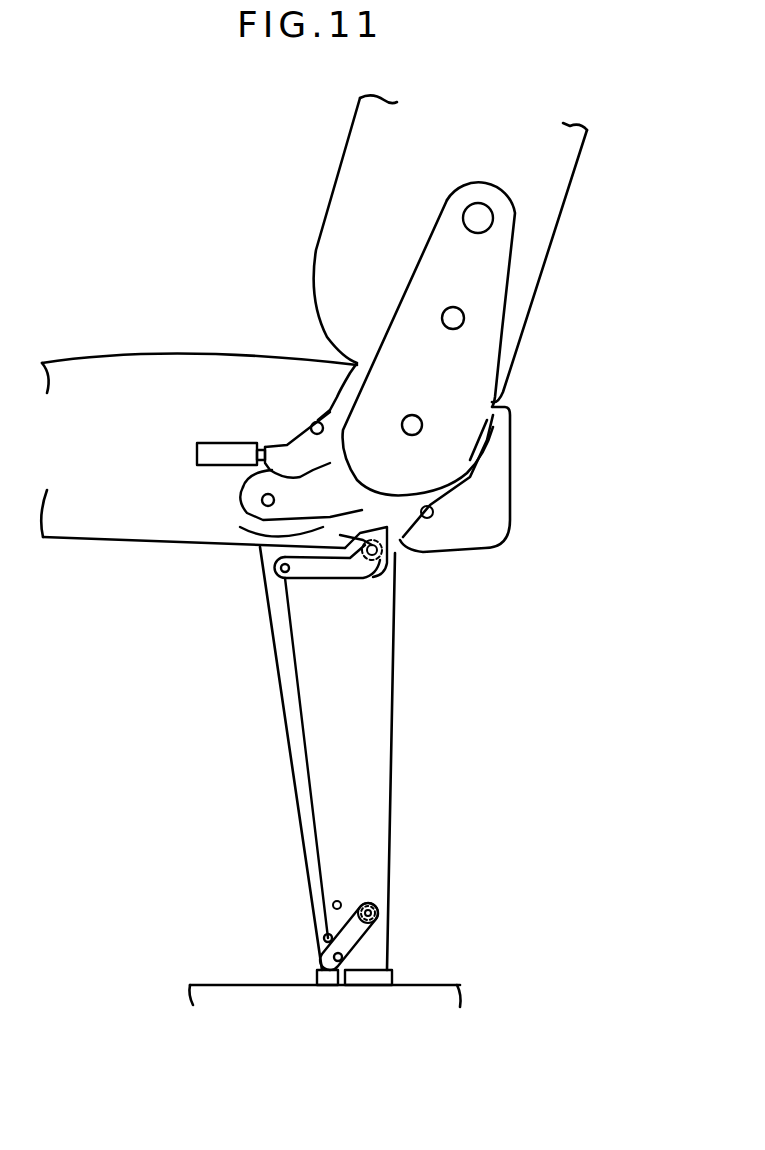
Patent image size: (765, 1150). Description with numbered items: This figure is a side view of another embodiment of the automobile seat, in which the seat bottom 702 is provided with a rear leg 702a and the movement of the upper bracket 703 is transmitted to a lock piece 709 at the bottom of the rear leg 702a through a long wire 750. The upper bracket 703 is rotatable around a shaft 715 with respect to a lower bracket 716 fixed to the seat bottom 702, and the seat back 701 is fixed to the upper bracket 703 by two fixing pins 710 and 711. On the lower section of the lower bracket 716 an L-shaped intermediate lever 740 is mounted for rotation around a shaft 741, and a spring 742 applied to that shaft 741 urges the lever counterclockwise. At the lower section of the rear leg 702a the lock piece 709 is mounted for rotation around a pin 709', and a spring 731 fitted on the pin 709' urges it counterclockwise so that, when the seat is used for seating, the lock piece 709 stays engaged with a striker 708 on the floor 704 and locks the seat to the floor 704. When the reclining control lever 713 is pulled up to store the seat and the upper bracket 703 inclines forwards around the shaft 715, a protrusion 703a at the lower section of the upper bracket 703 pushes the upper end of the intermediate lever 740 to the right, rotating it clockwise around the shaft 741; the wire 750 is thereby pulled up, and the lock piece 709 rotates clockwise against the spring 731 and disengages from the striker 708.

The seat back 701 is at (575, 185).
The seat bottom 702 is at (240, 355).
The rear leg 702a is at (395, 730).
The upper bracket 703 is at (500, 345).
The protrusion 703a is at (245, 532).
The floor 704 is at (218, 984).
The striker 708 is at (350, 986).
The lock piece 709 is at (389, 936).
The pin 709' is at (410, 906).
The fixing pin 710 is at (472, 216).
The fixing pin 711 is at (453, 310).
The reclining control lever 713 is at (213, 447).
The shaft 715 is at (415, 416).
The lower bracket 716 is at (316, 416).
The spring 731 is at (342, 902).
The intermediate lever 740 is at (336, 570).
The shaft 741 is at (388, 567).
The spring 742 is at (403, 540).
The long wire 750 is at (300, 722).